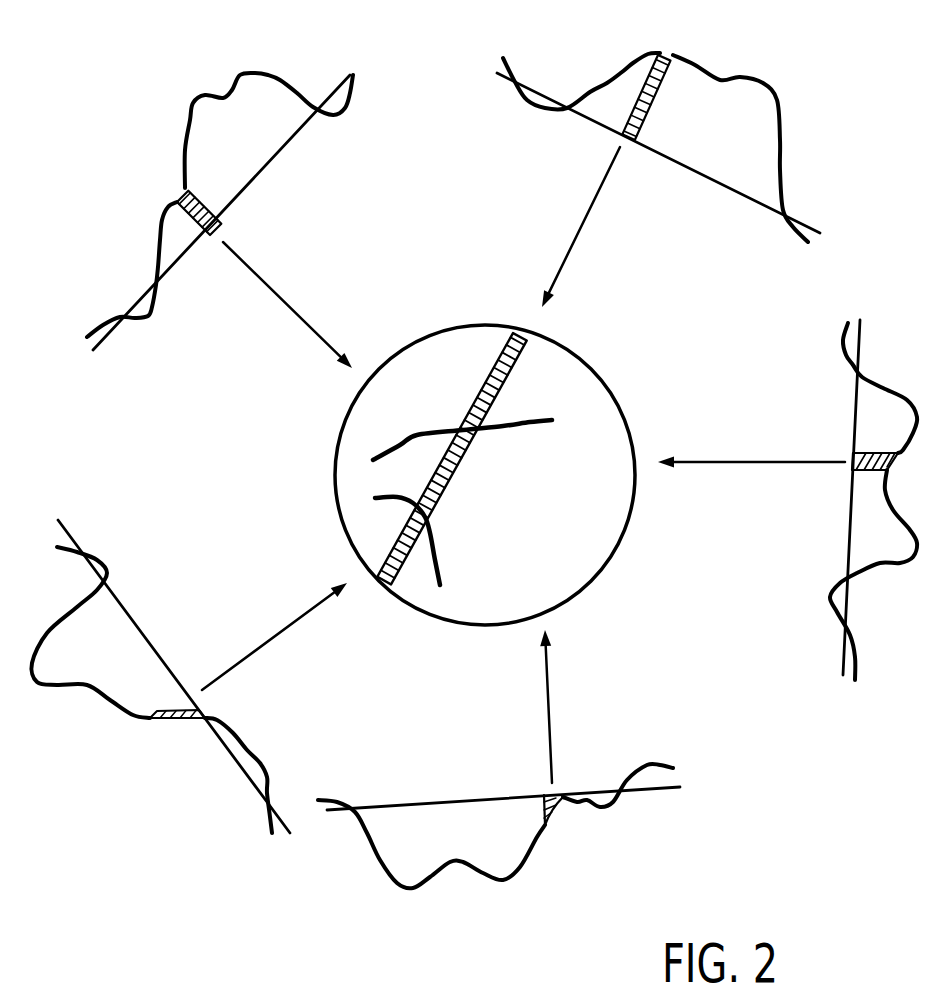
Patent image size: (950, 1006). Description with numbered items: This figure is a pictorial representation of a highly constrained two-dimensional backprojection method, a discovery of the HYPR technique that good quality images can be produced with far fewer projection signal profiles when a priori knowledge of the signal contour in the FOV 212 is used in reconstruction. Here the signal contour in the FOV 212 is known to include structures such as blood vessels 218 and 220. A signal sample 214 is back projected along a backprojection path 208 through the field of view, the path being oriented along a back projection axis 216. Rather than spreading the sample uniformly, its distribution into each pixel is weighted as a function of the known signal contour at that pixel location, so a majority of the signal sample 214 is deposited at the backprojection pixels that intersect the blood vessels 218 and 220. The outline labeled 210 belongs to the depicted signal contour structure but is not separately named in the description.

The backprojection path 208 is at (470, 448).
The tissue contour 210 is at (777, 93).
The FOV 212 is at (340, 442).
The signal sample 214 is at (643, 120).
The back projection axis 216 is at (590, 207).
The blood vessel 218 is at (448, 430).
The blood vessel 220 is at (437, 555).